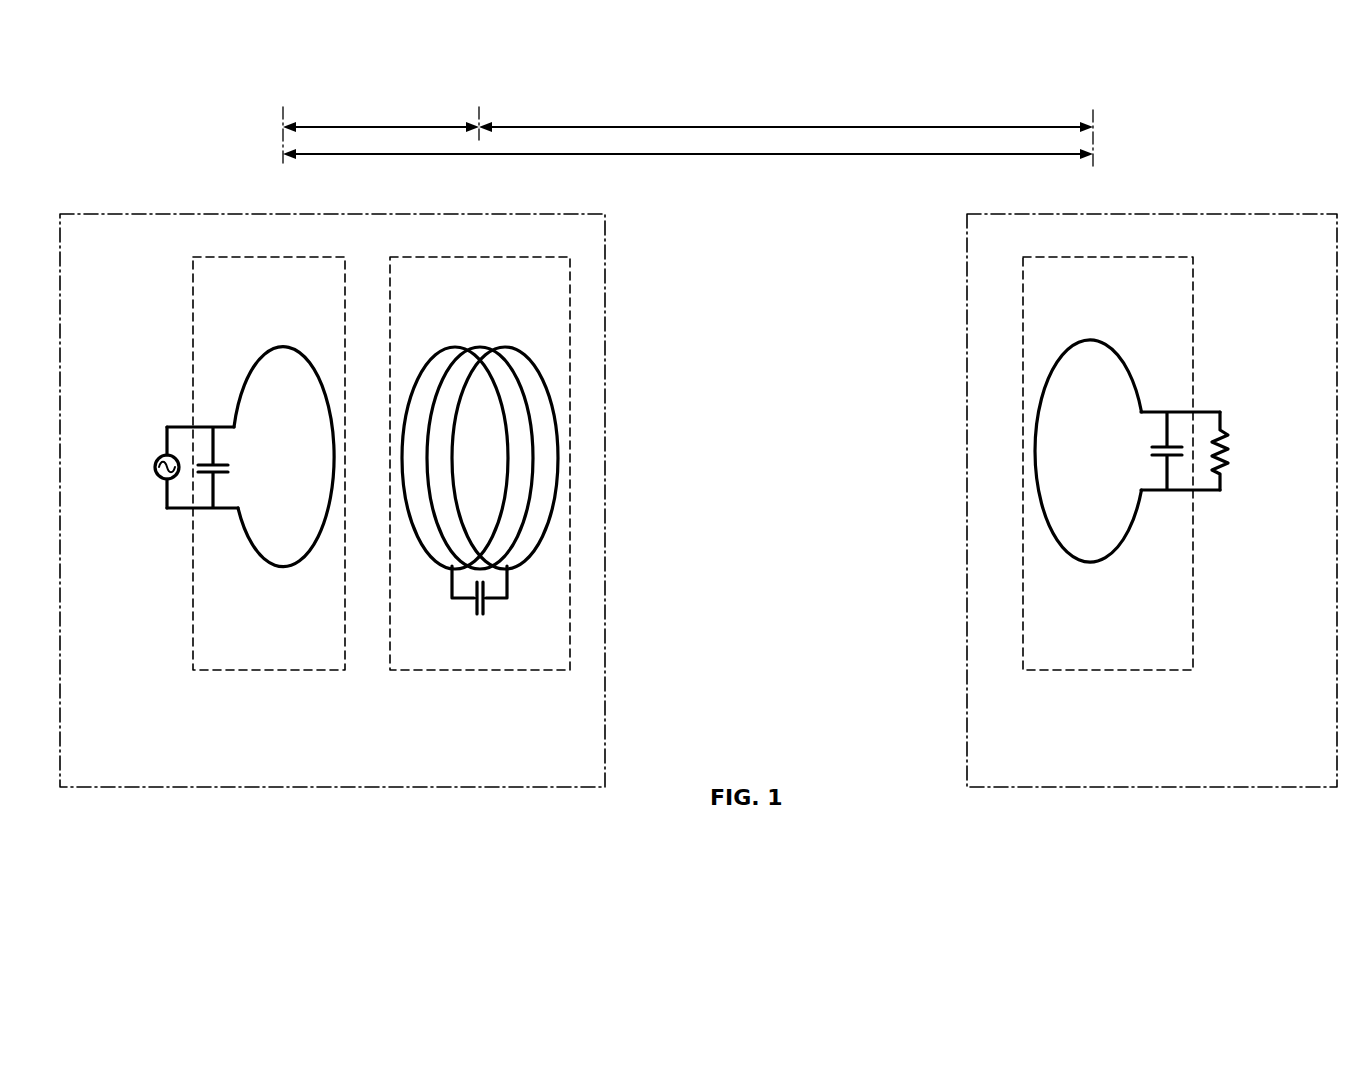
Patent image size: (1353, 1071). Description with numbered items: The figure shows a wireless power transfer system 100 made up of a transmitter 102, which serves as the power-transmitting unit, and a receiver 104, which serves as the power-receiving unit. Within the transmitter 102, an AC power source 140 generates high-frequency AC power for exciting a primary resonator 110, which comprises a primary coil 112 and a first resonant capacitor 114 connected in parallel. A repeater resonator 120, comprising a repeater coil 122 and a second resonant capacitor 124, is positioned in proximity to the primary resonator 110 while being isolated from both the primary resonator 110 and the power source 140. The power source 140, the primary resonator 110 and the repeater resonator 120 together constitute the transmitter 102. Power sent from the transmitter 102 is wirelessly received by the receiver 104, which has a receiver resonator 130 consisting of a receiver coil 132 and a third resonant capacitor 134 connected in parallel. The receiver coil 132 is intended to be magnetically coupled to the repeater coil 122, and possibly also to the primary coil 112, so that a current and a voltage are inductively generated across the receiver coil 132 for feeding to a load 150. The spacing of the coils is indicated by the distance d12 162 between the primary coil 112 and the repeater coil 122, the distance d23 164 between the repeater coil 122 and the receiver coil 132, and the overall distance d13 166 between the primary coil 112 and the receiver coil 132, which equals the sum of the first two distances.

The WPT system 100 is at (1098, 76).
The transmitter 102 is at (96, 214).
The receiver 104 is at (1238, 214).
The primary resonator 110 is at (208, 672).
The primary coil 112 is at (275, 345).
The first resonant capacitor 114 is at (223, 476).
The repeater resonator 120 is at (418, 672).
The repeater coil 122 is at (482, 348).
The second resonant capacitor 124 is at (486, 600).
The receiver resonator 130 is at (1041, 672).
The receiver coil 132 is at (1090, 341).
The third resonant capacitor 134 is at (1163, 460).
The AC power source 140 is at (157, 477).
The load 150 is at (1226, 464).
The distance d12 162 is at (405, 78).
The distance d23 164 is at (805, 78).
The distance d13 166 is at (742, 186).